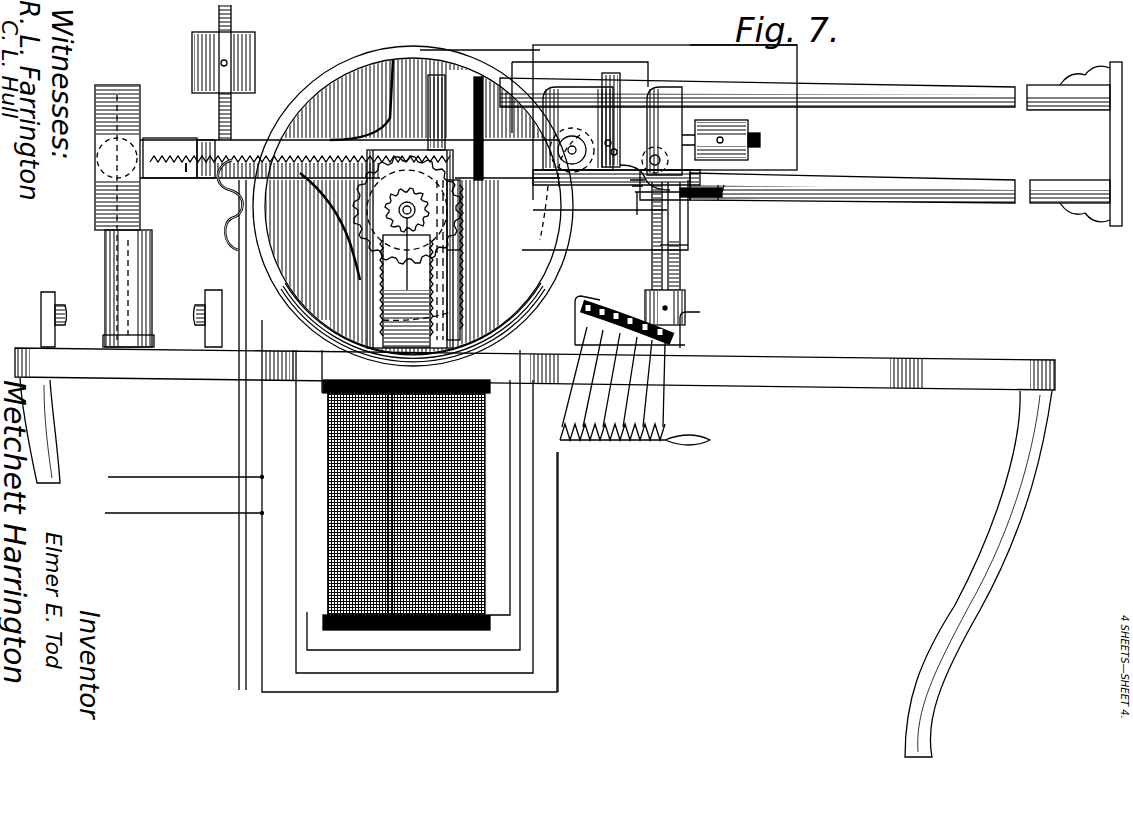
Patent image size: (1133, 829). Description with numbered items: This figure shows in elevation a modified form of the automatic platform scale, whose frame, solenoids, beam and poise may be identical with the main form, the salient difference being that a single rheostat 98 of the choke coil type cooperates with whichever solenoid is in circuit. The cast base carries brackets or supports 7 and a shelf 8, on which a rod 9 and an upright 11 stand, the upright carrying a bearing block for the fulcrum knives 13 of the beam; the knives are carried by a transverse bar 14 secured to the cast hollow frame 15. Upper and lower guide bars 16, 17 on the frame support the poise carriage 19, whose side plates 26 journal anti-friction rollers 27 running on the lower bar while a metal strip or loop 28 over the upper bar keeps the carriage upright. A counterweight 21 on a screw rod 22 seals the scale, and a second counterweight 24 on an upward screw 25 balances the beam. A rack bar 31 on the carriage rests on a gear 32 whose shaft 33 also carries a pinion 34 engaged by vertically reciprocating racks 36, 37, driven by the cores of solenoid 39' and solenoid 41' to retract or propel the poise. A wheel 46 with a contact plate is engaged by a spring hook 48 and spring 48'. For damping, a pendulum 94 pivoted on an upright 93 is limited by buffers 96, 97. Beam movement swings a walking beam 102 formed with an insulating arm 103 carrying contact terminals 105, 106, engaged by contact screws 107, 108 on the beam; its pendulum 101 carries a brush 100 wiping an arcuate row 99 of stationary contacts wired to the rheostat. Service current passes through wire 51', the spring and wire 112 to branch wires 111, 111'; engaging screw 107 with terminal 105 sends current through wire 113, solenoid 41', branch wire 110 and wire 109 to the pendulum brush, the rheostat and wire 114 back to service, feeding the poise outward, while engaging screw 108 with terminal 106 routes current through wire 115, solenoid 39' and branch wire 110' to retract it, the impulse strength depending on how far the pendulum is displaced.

The brackets or supports 7 is at (50, 442).
The shelf 8 is at (165, 370).
The vertical rod 9 is at (238, 392).
The upright 11 is at (443, 290).
The fulcrum knives 13 is at (415, 165).
The transverse bar 14 is at (440, 128).
The cast hollow frame 15 is at (260, 140).
The upper guide bar 16 is at (920, 92).
The lower guide bar 17 is at (980, 200).
The poise carriage 19 is at (670, 95).
The counterweight 21 is at (140, 113).
The screw rod 22 is at (188, 170).
The second counterweight 24 is at (193, 50).
The screw 25 is at (218, 20).
The side plates 26 is at (573, 100).
The anti-friction rollers 27 is at (568, 182).
The metal strip or loop 28 is at (620, 82).
The rack bar 31 is at (170, 142).
The gear 32 is at (461, 260).
The shaft 33 is at (406, 291).
The pinion 34 is at (417, 259).
The vertically reciprocating rack 36 is at (440, 318).
The vertically reciprocating rack 37 is at (461, 254).
The solenoid 39' is at (313, 504).
The solenoid 41' is at (462, 505).
The wheel 46 is at (377, 77).
The spring hook 48 is at (264, 205).
The spring 48' is at (331, 169).
The wire 51' is at (331, 506).
The upright 93 is at (150, 258).
The pendulum 94 is at (140, 276).
The buffer 96 is at (45, 310).
The buffer 97 is at (215, 290).
The rheostat 98 is at (638, 452).
The arcuate row of stationary contacts 99 is at (596, 308).
The brush or wiper 100 is at (688, 318).
The pendulum 101 is at (668, 237).
The walking beam 102 is at (690, 200).
The arm 103 is at (705, 140).
The contact terminal 105 is at (632, 160).
The contact terminal 106 is at (700, 197).
The contact screw 107 is at (636, 205).
The contact screw 108 is at (750, 160).
The wire 109 is at (612, 217).
The branch wire 110 is at (399, 496).
The branch wire 110' is at (406, 477).
The branch wire 111 is at (652, 107).
The branch wire 111' is at (742, 31).
The wire 112 is at (425, 50).
The wire 113 is at (618, 62).
The wire 114 is at (494, 692).
The wire 115 is at (690, 248).